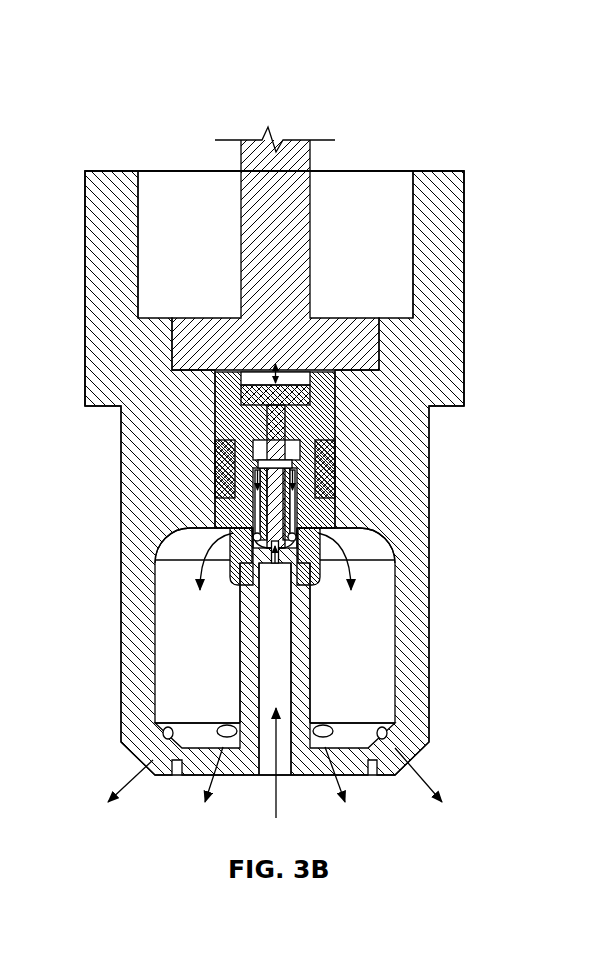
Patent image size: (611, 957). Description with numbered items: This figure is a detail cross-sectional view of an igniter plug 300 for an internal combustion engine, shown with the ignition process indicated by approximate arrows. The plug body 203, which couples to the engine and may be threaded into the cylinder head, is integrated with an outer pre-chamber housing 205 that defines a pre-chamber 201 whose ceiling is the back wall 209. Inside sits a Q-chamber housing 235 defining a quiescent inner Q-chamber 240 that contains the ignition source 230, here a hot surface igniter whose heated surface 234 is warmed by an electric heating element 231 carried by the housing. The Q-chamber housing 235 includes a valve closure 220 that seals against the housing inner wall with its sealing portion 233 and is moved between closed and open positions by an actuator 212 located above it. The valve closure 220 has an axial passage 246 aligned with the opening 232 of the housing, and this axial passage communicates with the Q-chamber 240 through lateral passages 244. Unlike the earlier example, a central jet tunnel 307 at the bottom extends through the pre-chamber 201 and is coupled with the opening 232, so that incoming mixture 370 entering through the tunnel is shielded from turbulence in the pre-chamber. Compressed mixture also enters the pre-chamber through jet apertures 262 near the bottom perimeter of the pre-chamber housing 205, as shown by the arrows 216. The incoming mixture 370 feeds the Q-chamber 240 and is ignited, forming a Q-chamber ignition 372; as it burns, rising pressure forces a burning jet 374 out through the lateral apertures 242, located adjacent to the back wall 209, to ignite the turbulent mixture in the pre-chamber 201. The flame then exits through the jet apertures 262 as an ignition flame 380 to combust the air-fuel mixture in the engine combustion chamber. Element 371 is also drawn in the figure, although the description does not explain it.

The igniter plug 300 is at (108, 85).
The plug body 203 is at (455, 212).
The actuator 212 is at (300, 215).
The Q-chamber housing 235 is at (330, 393).
The valve closure 220 is at (241, 397).
The ignition source 230 is at (335, 445).
The Q-chamber ignition 372 is at (335, 465).
The heated surface 234 is at (335, 485).
The electric heating element 231 is at (335, 497).
The Q-chamber 240 is at (335, 506).
The lateral passages 244 is at (262, 452).
The back wall 209 is at (395, 550).
The burning jet 374 is at (395, 558).
The pre-chamber 201 is at (167, 692).
The pre-chamber housing 205 is at (413, 690).
The axial passage 246 is at (262, 606).
The lateral apertures 242 is at (339, 579).
The inner sleeve left wall 371 is at (257, 612).
The sealing portion 233 is at (298, 590).
The opening 232 is at (300, 657).
The arrows 216 is at (225, 733).
The jet apertures 262 is at (377, 733).
The ignition flame 380 is at (422, 786).
The central jet tunnel 307 is at (362, 768).
The incoming mixture 370 is at (278, 803).